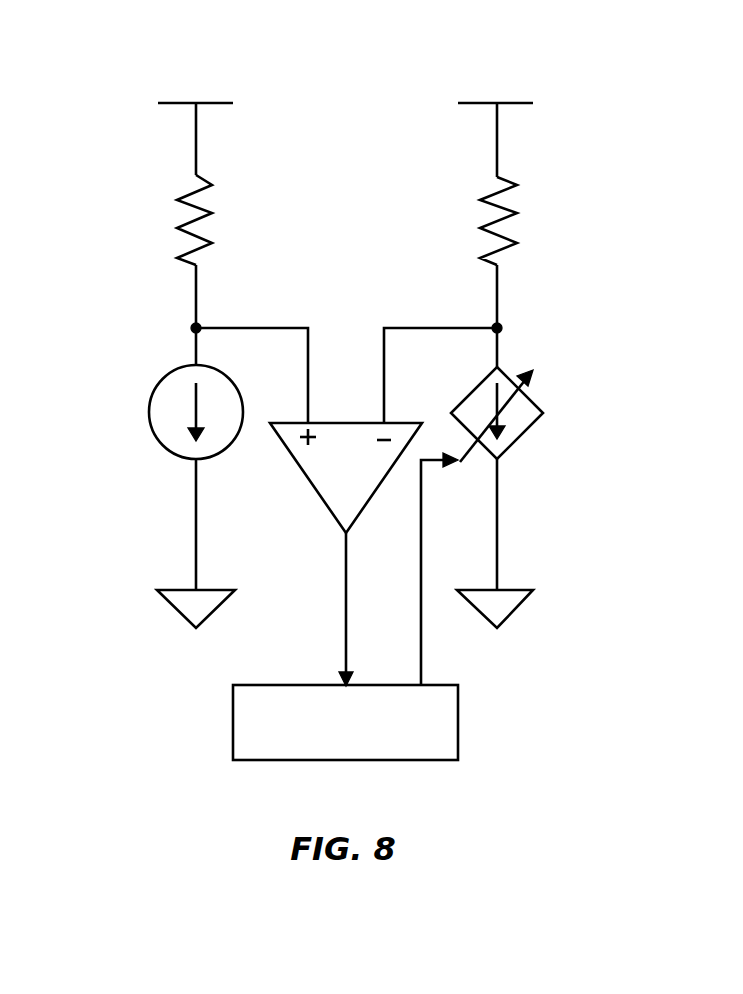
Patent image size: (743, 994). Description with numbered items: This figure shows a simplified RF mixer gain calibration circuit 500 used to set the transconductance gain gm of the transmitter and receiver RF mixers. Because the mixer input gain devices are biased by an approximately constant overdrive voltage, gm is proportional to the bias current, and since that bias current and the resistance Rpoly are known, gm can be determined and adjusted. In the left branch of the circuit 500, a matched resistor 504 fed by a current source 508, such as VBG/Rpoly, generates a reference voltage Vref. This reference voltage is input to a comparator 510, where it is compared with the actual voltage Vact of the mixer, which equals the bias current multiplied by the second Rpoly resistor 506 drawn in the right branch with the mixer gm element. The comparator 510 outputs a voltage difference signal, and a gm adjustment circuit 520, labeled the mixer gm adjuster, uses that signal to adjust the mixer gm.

The RF mixer gain calibration circuit 500 is at (630, 288).
The matched resistor 504 is at (210, 212).
The poly resistor Rpoly 506 is at (512, 185).
The current source 508 is at (163, 448).
The comparator 510 is at (312, 518).
The gm adjustment circuit 520 is at (233, 723).